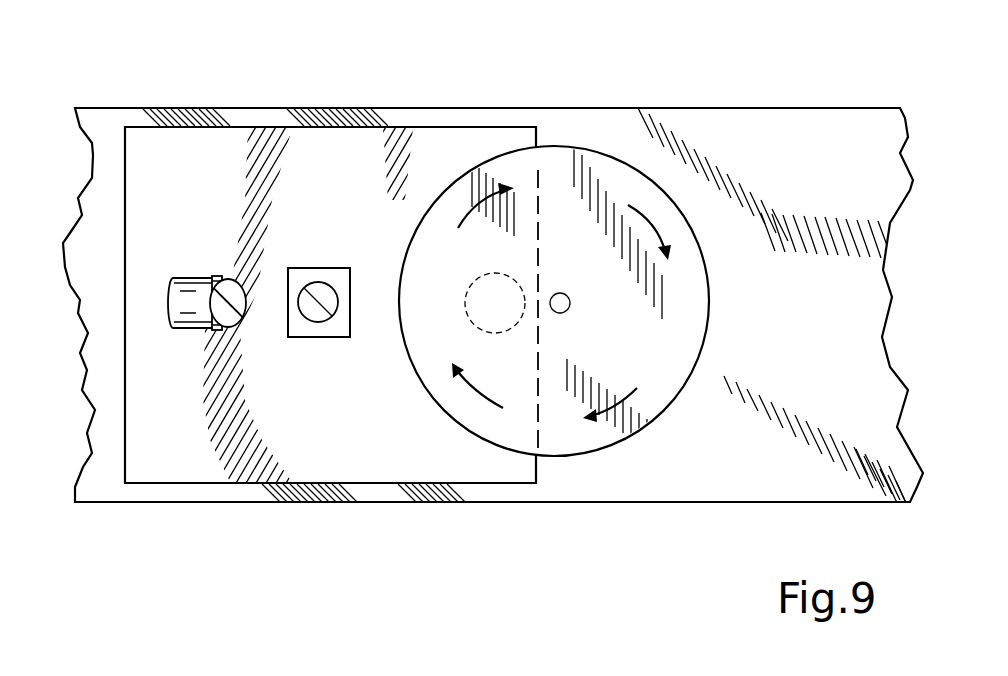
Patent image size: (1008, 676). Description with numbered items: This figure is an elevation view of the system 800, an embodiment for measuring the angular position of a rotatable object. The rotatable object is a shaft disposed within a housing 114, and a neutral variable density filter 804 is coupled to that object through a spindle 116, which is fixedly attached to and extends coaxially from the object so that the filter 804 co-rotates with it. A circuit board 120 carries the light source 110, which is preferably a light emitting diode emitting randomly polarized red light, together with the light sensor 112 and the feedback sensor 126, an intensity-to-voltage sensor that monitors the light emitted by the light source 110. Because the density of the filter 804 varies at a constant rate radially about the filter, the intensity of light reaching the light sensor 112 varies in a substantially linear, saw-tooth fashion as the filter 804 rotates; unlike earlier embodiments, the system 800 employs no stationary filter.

The light source 110 is at (193, 333).
The light sensor 112 is at (464, 311).
The housing 114 is at (698, 108).
The spindle 116 is at (570, 305).
The circuit board 120 is at (235, 127).
The feedback sensor 126 is at (322, 268).
The system 800 is at (358, 96).
The neutral variable density filter 804 is at (711, 284).